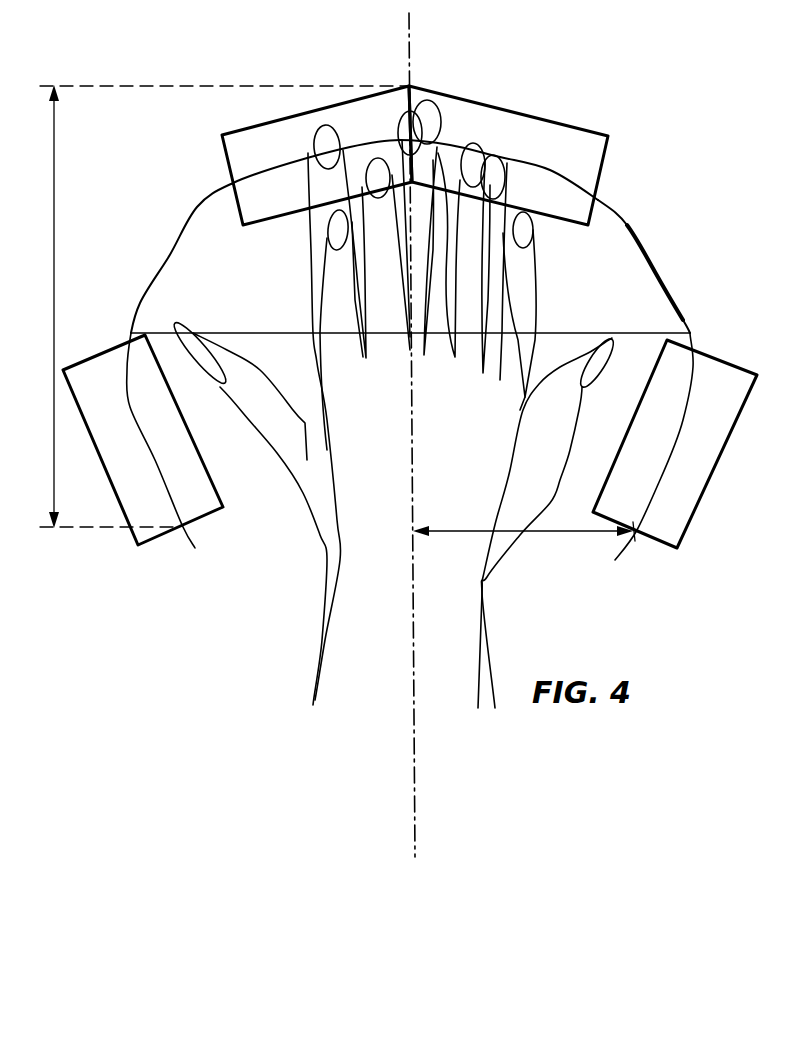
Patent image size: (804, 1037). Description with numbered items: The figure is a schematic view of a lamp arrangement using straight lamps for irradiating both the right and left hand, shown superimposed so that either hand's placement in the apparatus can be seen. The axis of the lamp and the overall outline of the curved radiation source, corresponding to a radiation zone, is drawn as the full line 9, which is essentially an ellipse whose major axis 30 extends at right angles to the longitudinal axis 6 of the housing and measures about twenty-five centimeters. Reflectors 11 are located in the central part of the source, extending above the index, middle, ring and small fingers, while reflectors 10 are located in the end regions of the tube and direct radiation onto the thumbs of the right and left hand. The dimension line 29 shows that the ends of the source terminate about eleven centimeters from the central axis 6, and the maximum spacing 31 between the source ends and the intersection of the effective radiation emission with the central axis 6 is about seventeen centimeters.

The longitudinal axis 6 is at (410, 32).
The center line of radiation source 9 is at (645, 252).
The reflectors 10 is at (197, 512).
The reflectors 11 is at (246, 130).
The dimension line 29 is at (563, 536).
The major axis 30 is at (576, 330).
The maximum spacing 31 is at (55, 267).